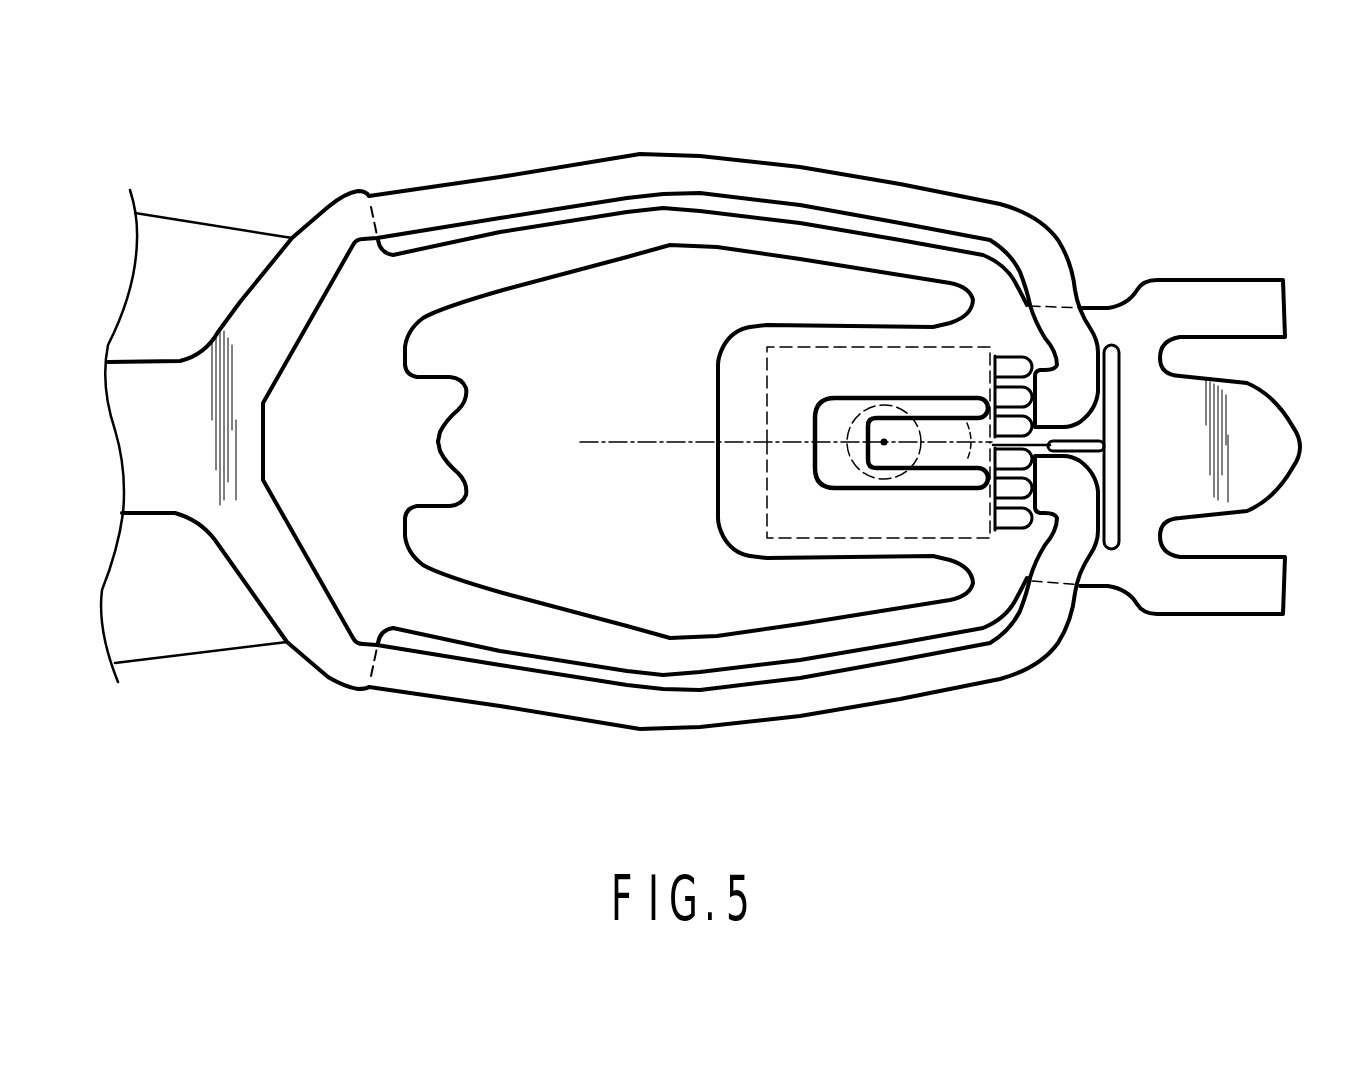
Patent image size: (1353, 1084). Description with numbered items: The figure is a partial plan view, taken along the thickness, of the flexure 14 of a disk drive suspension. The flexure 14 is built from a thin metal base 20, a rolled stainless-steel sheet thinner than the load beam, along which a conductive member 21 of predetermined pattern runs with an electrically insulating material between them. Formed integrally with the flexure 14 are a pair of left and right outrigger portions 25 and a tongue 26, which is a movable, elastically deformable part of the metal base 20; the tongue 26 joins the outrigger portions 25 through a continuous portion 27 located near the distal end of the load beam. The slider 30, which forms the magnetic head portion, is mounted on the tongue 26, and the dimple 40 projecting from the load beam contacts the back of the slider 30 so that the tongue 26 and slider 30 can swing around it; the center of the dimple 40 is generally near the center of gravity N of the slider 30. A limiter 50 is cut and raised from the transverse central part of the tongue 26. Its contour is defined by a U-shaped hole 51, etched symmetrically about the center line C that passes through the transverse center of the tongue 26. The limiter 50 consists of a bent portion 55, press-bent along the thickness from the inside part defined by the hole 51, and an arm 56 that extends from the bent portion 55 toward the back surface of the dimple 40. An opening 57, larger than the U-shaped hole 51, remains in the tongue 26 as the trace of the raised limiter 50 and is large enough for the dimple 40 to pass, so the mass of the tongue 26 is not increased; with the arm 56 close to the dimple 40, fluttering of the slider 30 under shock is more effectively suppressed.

The flexure 14 is at (242, 208).
The metal base 20 is at (196, 657).
The conductive member 21 is at (491, 703).
The outrigger portions 25 is at (655, 655).
The tongue 26 is at (730, 380).
The continuous portion 27 is at (982, 605).
The slider 30 is at (885, 347).
The dimple 40 is at (815, 420).
The limiter 50 is at (937, 414).
The U-shaped hole 51 is at (848, 427).
The bent portion 55 is at (982, 457).
The arm 56 is at (890, 455).
The opening 57 is at (814, 470).
The center line C is at (657, 441).
The center of gravity N is at (886, 440).